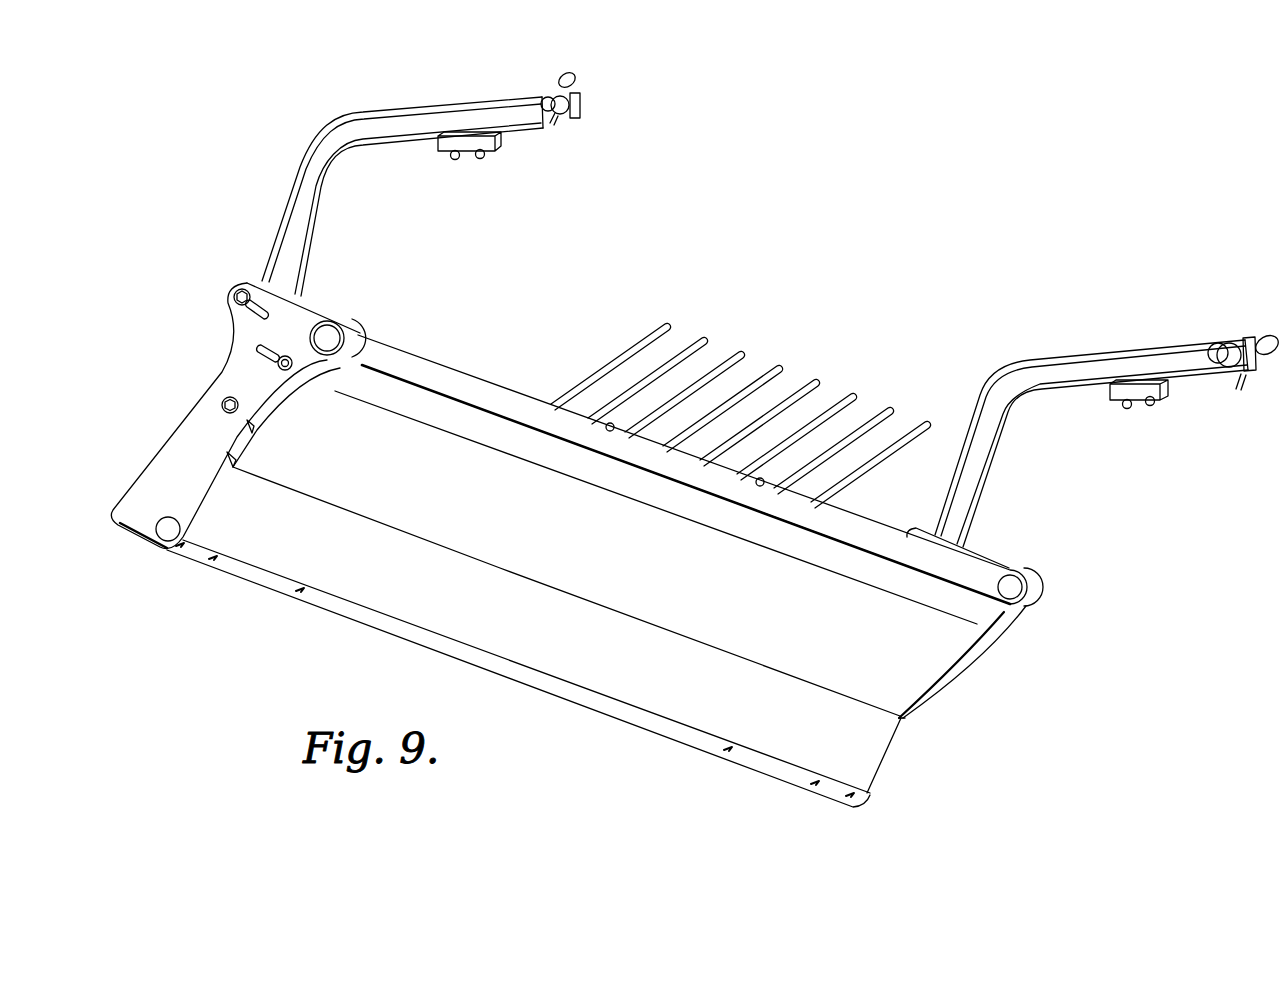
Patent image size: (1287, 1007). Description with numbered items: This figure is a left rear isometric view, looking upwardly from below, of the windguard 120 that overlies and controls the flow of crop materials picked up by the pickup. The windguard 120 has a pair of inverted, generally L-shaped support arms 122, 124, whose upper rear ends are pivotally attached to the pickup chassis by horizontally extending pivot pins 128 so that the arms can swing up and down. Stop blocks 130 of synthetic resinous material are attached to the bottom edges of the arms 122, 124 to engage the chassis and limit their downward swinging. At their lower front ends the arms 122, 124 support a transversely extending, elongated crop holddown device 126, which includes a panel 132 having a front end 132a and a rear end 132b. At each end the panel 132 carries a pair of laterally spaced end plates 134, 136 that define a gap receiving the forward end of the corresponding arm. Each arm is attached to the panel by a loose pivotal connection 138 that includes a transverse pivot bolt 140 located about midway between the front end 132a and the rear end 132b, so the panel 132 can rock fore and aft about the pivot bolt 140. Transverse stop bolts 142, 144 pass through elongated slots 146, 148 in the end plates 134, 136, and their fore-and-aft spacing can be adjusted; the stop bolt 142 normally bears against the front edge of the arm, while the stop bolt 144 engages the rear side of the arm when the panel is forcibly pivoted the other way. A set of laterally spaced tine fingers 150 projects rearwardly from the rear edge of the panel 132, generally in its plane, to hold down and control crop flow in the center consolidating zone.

The windguard 120 is at (1088, 515).
The support arm 122 is at (1083, 372).
The support arm 124 is at (405, 118).
The crop holddown device 126 is at (418, 340).
The pivot pin 128 is at (548, 98).
The stop block 130 is at (465, 153).
The panel 132 is at (600, 678).
The front end of panel 132a is at (348, 617).
The rear end of panel 132b is at (492, 385).
The end plate 134 is at (262, 420).
The end plate 136 is at (153, 483).
The loose pivotal connection 138 is at (220, 411).
The pivot bolt 140 is at (224, 401).
The stop bolt 142 is at (240, 290).
The stop bolt 144 is at (288, 370).
The elongated slot 146 is at (246, 311).
The elongated slot 148 is at (260, 352).
The tine finger 150 is at (700, 343).